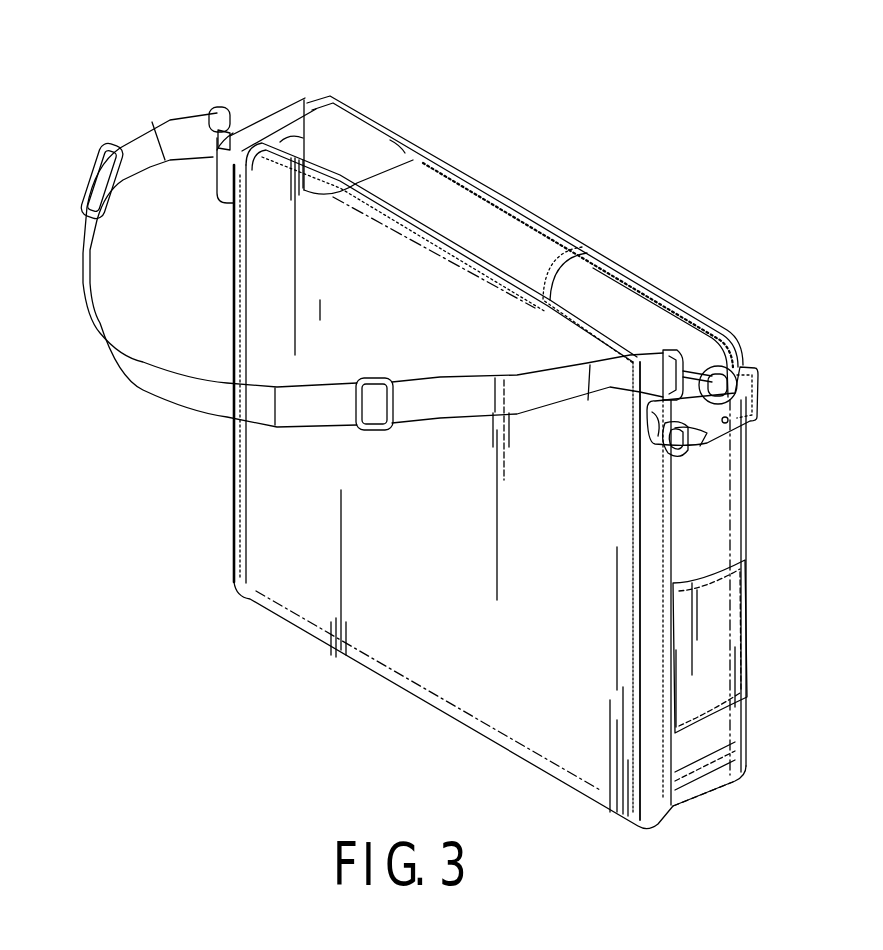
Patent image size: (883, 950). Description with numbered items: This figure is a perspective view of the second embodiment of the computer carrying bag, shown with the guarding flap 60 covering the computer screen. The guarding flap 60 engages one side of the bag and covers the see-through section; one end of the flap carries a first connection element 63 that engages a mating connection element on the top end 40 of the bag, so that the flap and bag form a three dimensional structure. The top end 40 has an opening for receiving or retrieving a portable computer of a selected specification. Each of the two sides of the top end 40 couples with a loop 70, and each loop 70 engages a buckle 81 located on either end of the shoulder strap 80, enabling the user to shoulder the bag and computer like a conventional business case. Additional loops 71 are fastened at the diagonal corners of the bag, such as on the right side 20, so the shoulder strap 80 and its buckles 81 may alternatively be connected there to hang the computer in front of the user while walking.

The right side 20 is at (707, 640).
The top end 40 is at (612, 268).
The guarding flap 60 is at (407, 592).
The first connection element 63 is at (515, 190).
The loop 70 is at (735, 365).
The loop 71 is at (710, 450).
The shoulder strap 80 is at (173, 377).
The buckle 81 is at (690, 358).